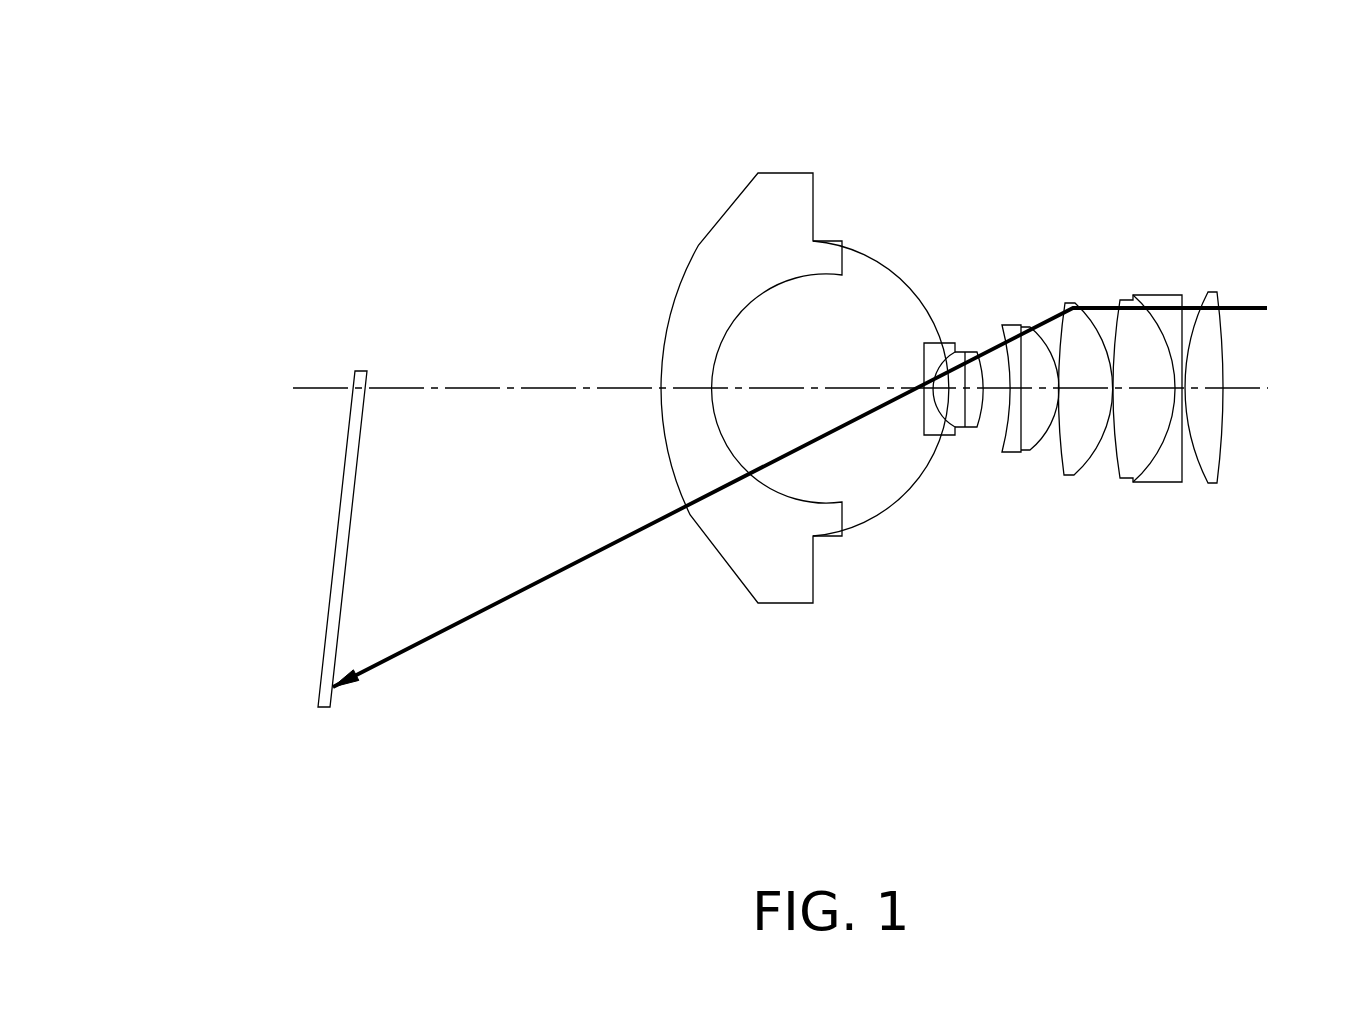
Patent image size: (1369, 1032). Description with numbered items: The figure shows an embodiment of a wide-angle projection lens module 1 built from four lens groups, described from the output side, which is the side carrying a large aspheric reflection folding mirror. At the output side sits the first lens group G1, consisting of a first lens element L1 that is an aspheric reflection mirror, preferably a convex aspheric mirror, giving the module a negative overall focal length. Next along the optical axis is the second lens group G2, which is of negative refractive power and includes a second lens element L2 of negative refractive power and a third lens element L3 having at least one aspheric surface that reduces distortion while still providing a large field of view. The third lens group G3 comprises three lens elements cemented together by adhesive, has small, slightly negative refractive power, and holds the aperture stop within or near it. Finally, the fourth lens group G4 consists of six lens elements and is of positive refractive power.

The wide-angle projection lens module 1 is at (212, 60).
The first lens group G1 is at (312, 507).
The second lens group G2 is at (792, 373).
The third lens group G3 is at (977, 329).
The fourth lens group G4 is at (1223, 287).
The first lens element L1 is at (340, 543).
The second lens element L2 is at (738, 558).
The third lens element L3 is at (830, 518).